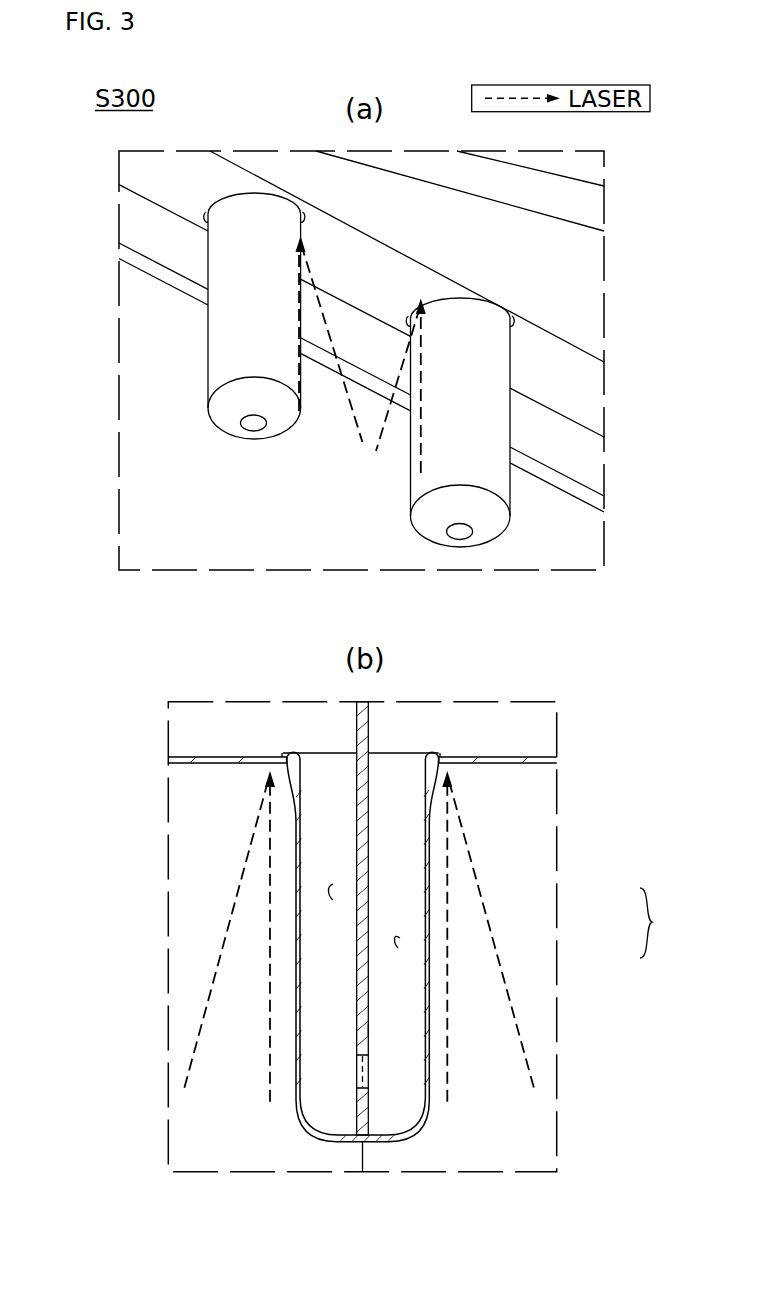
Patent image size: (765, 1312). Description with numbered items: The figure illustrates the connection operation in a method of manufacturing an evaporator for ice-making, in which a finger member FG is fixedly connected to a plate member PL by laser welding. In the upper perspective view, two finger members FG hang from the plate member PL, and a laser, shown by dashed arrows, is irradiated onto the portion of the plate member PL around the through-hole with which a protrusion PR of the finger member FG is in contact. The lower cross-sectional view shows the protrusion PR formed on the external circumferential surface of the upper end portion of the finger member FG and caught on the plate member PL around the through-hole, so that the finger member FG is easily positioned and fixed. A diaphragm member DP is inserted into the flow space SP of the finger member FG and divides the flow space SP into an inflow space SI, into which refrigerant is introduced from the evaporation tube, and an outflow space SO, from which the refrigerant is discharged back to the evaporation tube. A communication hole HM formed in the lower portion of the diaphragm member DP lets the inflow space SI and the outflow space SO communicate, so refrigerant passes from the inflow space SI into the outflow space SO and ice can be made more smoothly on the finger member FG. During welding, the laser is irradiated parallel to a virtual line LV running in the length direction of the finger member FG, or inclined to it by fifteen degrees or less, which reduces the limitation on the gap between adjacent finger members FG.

The plate member PL is at (588, 254).
The finger member FG is at (496, 540).
The protrusion PR is at (438, 753).
The diaphragm member DP is at (346, 863).
The communication hole HM is at (357, 1068).
The virtual line LV is at (363, 1030).
The inflow space SI is at (333, 884).
The outflow space SO is at (400, 938).
The flow space SP is at (663, 923).